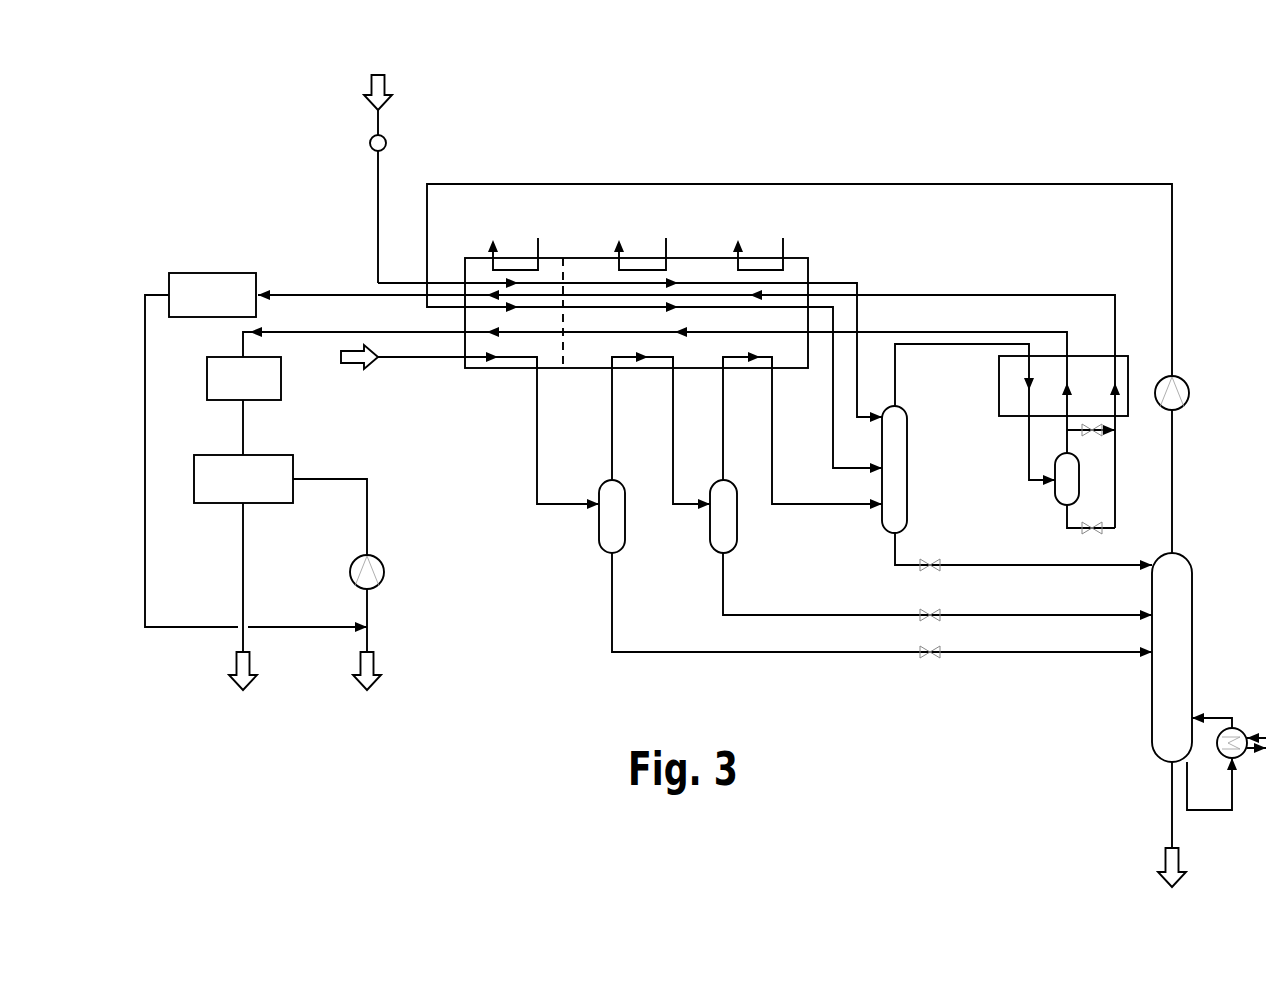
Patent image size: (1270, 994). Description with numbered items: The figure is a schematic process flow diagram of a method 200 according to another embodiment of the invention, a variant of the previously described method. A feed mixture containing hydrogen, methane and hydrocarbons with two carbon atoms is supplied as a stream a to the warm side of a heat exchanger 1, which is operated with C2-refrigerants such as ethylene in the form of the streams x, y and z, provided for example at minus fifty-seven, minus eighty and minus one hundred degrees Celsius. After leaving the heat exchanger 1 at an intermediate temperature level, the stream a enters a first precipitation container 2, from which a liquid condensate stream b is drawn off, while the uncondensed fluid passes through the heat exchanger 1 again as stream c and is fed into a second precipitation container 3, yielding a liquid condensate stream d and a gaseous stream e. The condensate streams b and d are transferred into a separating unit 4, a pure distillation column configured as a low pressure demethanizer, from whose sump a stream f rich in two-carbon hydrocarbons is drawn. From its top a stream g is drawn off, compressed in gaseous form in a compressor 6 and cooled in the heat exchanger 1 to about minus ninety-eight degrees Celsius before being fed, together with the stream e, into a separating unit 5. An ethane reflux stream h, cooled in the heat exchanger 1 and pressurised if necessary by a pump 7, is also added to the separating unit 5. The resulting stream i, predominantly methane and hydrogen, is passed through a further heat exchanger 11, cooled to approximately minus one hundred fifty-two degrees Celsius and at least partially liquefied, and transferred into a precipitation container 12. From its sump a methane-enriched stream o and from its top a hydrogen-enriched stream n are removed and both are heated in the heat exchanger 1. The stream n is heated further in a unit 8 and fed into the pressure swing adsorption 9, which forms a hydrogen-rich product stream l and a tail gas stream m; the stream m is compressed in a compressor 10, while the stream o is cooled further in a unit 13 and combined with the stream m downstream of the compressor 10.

The heat exchanger 1 is at (515, 370).
The first precipitation container 2 is at (599, 530).
The second precipitation container 3 is at (710, 530).
The separating unit 4 is at (1195, 560).
The separating unit 5 is at (907, 480).
The compressor 6 is at (1190, 396).
The pump 7 is at (370, 141).
The unit 8 is at (206, 385).
The pressure swing adsorption 9 is at (273, 453).
The compressor 10 is at (385, 570).
The further heat exchanger 11 is at (1000, 417).
The precipitation container 12 is at (1050, 493).
The unit 13 is at (205, 273).
The method 200 is at (490, 773).
The stream a is at (438, 358).
The liquid condensate stream b is at (612, 614).
The stream c is at (612, 428).
The liquid condensate stream d is at (723, 563).
The gaseous stream e is at (723, 428).
The stream f is at (1168, 797).
The stream g is at (833, 397).
The reflux stream h is at (381, 175).
The stream i is at (897, 355).
The hydrogen-rich product stream l is at (243, 590).
The tail gas stream m is at (367, 500).
The stream n is at (980, 330).
The stream o is at (1053, 292).
The stream x is at (537, 250).
The stream y is at (662, 250).
The stream z is at (782, 250).